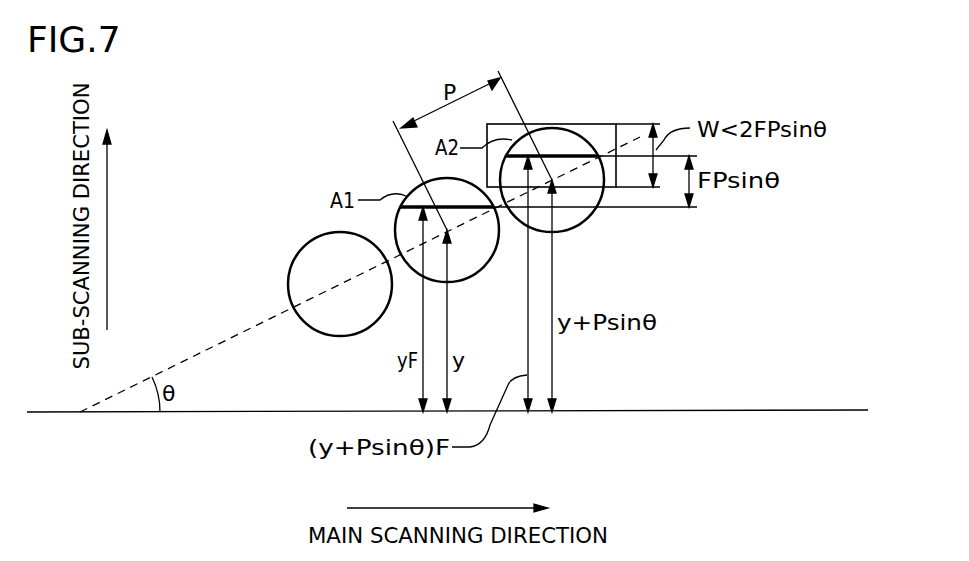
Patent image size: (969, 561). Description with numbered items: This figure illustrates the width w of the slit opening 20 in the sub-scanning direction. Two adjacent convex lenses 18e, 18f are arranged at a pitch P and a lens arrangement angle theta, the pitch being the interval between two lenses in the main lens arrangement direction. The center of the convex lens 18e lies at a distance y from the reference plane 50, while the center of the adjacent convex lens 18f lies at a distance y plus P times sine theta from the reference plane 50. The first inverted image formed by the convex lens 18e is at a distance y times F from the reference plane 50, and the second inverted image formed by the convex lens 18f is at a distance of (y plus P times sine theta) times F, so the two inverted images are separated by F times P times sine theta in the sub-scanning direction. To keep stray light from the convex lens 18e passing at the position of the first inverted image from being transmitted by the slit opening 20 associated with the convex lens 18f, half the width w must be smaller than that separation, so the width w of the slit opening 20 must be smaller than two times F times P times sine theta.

The slit opening 20 is at (595, 124).
The convex lens 18e is at (467, 279).
The convex lens 18f is at (578, 224).
The reference plane 50 is at (785, 411).